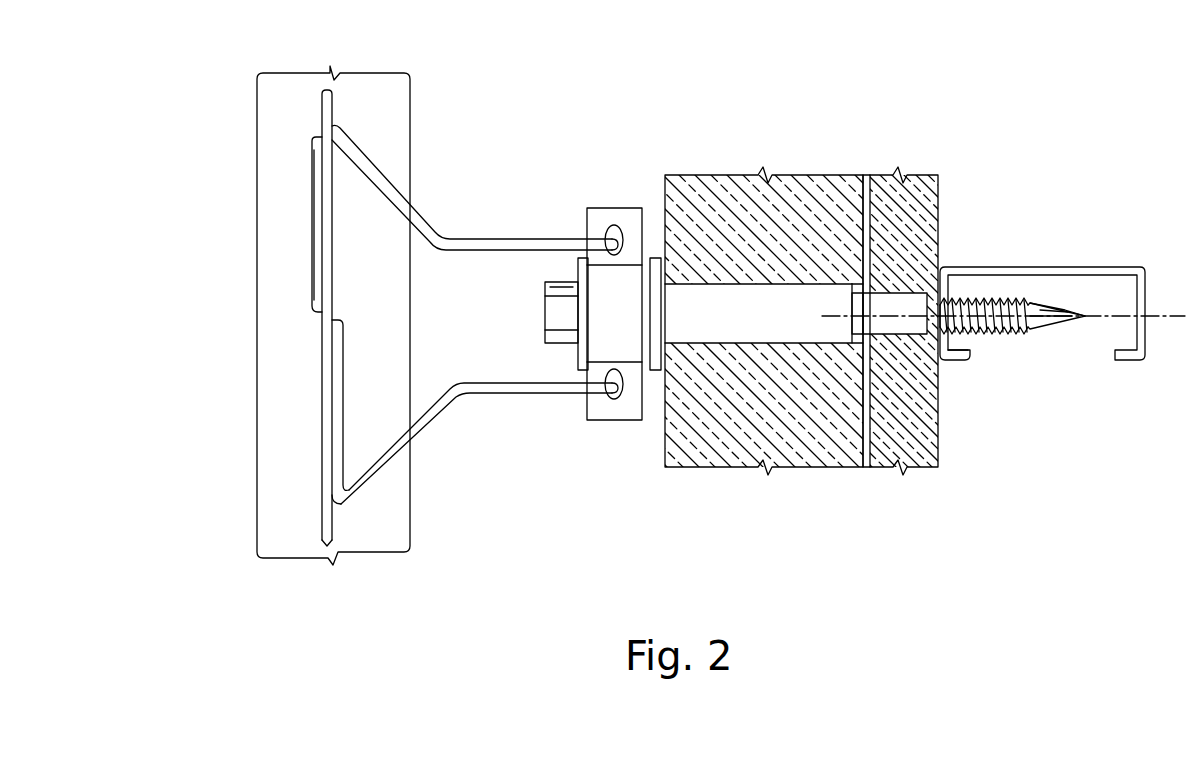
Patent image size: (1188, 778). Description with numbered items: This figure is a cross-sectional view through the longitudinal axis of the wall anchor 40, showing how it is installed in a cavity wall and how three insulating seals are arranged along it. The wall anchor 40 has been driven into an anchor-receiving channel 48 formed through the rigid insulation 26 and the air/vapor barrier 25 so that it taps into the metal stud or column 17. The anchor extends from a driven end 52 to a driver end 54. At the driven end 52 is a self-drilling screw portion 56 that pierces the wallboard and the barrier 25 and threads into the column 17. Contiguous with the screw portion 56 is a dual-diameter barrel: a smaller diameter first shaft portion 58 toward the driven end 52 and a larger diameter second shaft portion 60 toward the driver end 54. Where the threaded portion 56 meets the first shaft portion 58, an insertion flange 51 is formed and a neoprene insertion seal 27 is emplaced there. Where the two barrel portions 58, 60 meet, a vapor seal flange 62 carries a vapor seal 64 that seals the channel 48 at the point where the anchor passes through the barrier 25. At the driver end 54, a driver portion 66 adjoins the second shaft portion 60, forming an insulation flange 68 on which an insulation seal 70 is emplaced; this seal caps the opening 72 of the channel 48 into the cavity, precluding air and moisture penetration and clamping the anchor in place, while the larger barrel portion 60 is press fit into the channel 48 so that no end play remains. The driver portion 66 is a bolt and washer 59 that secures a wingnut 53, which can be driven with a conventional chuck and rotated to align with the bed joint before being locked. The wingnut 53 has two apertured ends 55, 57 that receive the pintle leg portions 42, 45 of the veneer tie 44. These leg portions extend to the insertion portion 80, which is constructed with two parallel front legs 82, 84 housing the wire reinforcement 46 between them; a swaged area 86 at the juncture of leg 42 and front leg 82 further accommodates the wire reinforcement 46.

The metal stud or column 17 is at (1120, 267).
The air/vapor barrier 25 is at (866, 173).
The insulation 26 is at (832, 468).
The insertion seal 27 is at (940, 345).
The wall anchor 40 is at (590, 163).
The pintle leg portion 42 is at (475, 170).
The veneer tie 44 is at (476, 240).
The pintle leg portion 45 is at (432, 423).
The wire reinforcement 46 is at (320, 471).
The anchor-receiving channel 48 is at (761, 362).
The insertion flange 51 is at (968, 300).
The driven end 52 is at (1012, 307).
The wingnut 53 is at (610, 422).
The driver end 54 is at (563, 290).
The apertured end 55 is at (597, 420).
The self-drilling screw portion 56 is at (1063, 336).
The apertured end 57 is at (578, 322).
The first shaft portion 58 is at (924, 223).
The washer 59 is at (577, 358).
The second shaft portion 60 is at (720, 312).
The vapor seal flange 62 is at (905, 400).
The vapor seal 64 is at (875, 295).
The driver portion 66 is at (545, 318).
The insulation flange 68 is at (651, 297).
The insulation seal 70 is at (670, 313).
The opening 72 is at (670, 365).
The insertion portion 80 is at (320, 251).
The front leg 82 is at (306, 204).
The front leg 84 is at (345, 427).
The swaged area 86 is at (318, 136).